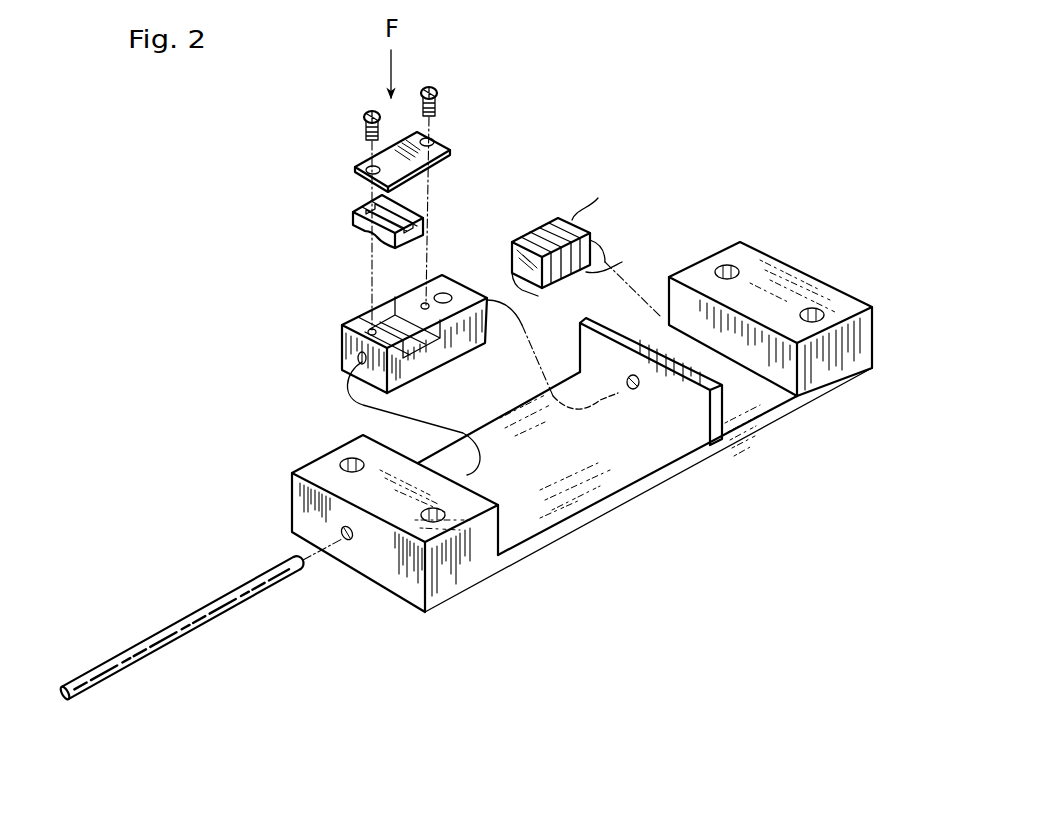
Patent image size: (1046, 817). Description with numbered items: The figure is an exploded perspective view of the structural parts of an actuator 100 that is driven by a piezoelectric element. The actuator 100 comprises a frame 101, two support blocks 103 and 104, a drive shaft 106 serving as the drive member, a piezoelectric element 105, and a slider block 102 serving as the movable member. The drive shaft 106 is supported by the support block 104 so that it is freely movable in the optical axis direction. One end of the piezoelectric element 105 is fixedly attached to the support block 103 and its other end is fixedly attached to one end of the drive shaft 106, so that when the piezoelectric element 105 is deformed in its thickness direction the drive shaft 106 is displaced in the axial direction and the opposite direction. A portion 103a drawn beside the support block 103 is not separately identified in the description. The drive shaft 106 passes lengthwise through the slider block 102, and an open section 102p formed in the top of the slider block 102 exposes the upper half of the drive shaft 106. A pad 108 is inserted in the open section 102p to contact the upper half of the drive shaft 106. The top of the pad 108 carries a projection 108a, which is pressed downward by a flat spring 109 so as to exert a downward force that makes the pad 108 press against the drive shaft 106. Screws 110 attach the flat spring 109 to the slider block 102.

The actuator 100 is at (678, 500).
The frame 101 is at (778, 423).
The slider block 102 is at (350, 347).
The open section 102p is at (380, 312).
The support block 103 is at (840, 373).
The upright wall 103a is at (719, 428).
The support block 104 is at (453, 598).
The piezoelectric element 105 is at (560, 222).
The drive shaft 106 is at (237, 590).
The pad 108 is at (355, 222).
The projection 108a is at (373, 197).
The flat spring 109 is at (452, 134).
The screws 110 is at (377, 119).